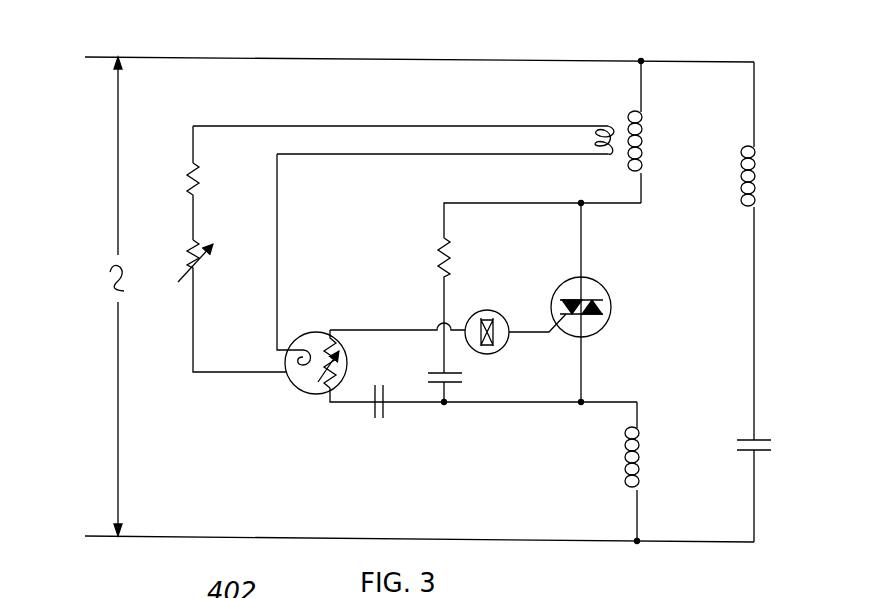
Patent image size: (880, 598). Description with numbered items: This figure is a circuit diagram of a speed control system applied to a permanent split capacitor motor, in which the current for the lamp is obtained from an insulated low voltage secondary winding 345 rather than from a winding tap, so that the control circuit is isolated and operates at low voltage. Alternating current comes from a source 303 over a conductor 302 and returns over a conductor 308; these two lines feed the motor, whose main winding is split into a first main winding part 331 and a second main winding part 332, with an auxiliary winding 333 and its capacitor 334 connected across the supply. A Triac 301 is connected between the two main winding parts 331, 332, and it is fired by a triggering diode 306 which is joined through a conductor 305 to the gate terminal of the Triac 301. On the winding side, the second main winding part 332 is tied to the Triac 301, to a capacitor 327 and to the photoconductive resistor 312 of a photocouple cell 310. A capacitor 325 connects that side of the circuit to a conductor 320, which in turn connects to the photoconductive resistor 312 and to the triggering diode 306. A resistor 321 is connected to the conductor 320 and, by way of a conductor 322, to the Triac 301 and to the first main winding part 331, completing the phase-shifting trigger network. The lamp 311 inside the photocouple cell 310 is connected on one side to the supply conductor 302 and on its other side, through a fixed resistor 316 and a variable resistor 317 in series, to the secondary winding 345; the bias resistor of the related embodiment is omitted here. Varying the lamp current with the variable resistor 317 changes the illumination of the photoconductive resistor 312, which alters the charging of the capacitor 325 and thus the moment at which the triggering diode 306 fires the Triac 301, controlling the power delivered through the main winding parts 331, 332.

The Triac 301 is at (610, 298).
The conductor 302 is at (335, 58).
The source of alternating current 303 is at (107, 285).
The conductor 305 is at (536, 335).
The triggering diode 306 is at (497, 314).
The conductor 308 is at (259, 506).
The photocouple cell 310 is at (313, 395).
The lamp 311 is at (300, 388).
The photoconductive resistor 312 is at (345, 372).
The fixed resistor 316 is at (198, 182).
The variable resistor 317 is at (200, 262).
The conductor 320 is at (393, 313).
The resistor 321 is at (452, 259).
The conductor 322 is at (531, 185).
The capacitor 325 is at (455, 386).
The capacitor 327 is at (387, 408).
The main winding part 331 is at (647, 157).
The main winding part 332 is at (645, 443).
The auxiliary winding 333 is at (760, 180).
The capacitor 334 is at (770, 445).
The insulated low voltage secondary winding 345 is at (608, 128).